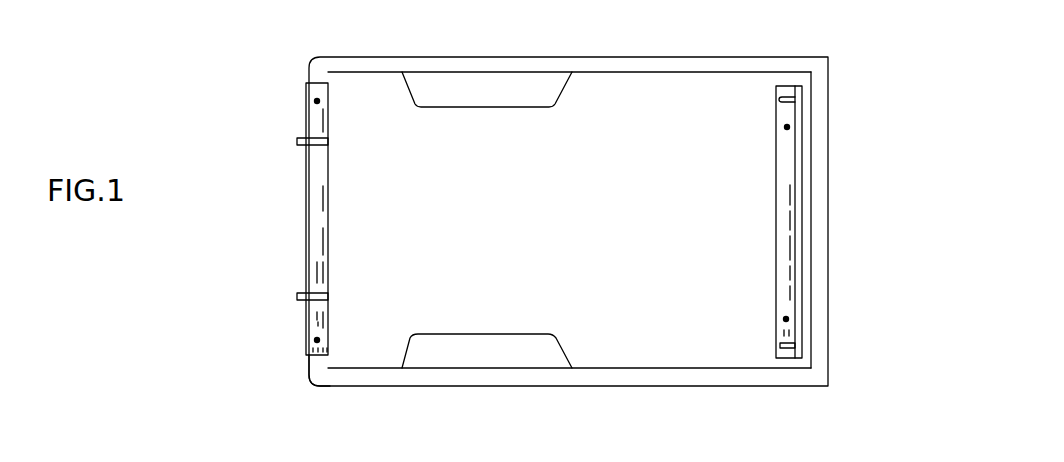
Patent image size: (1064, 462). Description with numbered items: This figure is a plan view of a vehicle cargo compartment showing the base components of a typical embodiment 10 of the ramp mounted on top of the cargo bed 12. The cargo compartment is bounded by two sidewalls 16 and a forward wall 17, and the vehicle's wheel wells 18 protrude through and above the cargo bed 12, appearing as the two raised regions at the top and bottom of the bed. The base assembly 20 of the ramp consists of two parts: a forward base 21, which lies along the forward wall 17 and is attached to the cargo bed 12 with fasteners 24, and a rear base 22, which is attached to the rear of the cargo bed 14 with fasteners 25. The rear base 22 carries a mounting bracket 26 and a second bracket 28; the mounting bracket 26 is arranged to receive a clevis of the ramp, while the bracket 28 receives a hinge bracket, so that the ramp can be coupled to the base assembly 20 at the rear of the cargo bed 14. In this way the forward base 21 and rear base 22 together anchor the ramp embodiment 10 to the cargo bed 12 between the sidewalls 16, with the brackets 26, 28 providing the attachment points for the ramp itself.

The ramp embodiment 10 is at (553, 400).
The cargo bed 12 is at (547, 228).
The rear of the cargo bed 14 is at (310, 362).
The sidewalls 16 is at (615, 57).
The forward wall 17 is at (828, 187).
The wheel wells 18 is at (480, 334).
The base assembly 20 is at (305, 260).
The forward base 21 is at (776, 228).
The rear base 22 is at (328, 220).
The fasteners 24 is at (784, 129).
The fasteners 25 is at (317, 101).
The mounting bracket 26 is at (780, 99).
The bracket 28 is at (300, 140).